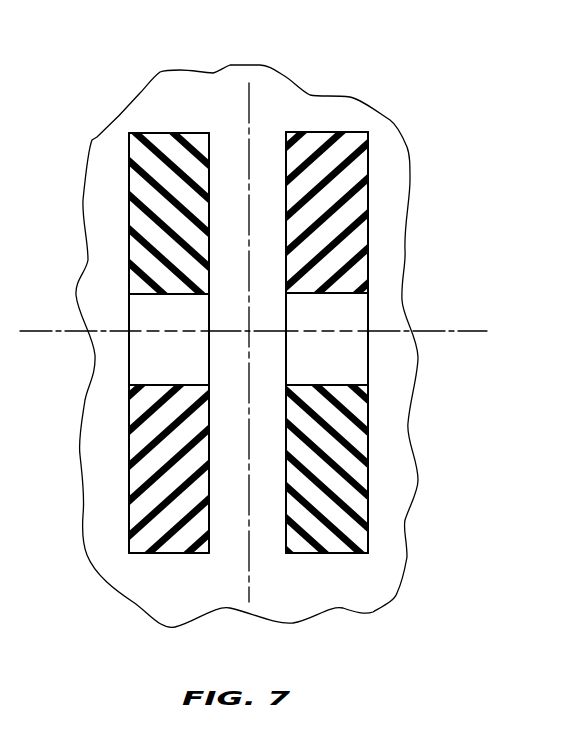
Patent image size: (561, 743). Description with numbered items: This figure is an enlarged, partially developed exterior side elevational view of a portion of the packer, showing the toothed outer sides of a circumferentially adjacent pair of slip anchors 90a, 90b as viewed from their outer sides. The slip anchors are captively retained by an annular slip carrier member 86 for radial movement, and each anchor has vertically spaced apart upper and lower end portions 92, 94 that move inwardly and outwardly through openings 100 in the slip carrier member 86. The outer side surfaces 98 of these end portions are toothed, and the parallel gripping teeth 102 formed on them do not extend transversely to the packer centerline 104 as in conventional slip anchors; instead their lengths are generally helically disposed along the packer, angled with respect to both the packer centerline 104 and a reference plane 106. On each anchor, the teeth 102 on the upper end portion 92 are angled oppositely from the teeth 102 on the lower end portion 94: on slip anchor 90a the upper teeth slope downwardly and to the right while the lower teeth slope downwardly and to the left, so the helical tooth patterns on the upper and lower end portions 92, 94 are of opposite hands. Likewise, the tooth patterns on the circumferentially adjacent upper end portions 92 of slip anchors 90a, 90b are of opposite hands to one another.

The slip carrier member 86 is at (268, 97).
The slip anchor 90a is at (147, 119).
The slip anchor 90b is at (324, 120).
The upper end portion 92 is at (129, 173).
The lower end portion 94 is at (129, 512).
The toothed outer side surface 98 is at (180, 192).
The opening 100 is at (368, 196).
The gripping teeth 102 is at (156, 152).
The packer centerline 104 is at (232, 63).
The reference plane 106 is at (469, 329).